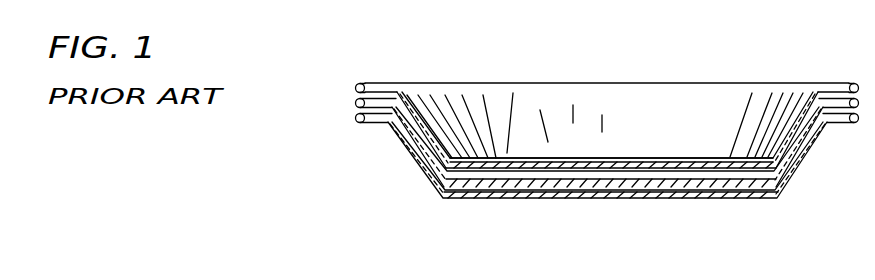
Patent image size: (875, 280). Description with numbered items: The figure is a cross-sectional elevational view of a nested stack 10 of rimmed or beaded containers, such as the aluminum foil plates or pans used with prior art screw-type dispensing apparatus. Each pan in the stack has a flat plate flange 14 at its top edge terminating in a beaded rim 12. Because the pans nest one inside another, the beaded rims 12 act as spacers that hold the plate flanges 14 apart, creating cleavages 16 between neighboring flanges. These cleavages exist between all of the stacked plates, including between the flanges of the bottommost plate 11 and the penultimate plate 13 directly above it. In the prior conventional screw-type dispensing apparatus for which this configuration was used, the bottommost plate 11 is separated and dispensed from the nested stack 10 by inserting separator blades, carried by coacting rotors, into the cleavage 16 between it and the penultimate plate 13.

The nested stack 10 is at (660, 138).
The bottommost plate 11 is at (462, 193).
The beaded rim 12 is at (352, 90).
The penultimate plate 13 is at (542, 180).
The plate flange 14 is at (381, 92).
The cleavage 16 is at (351, 113).